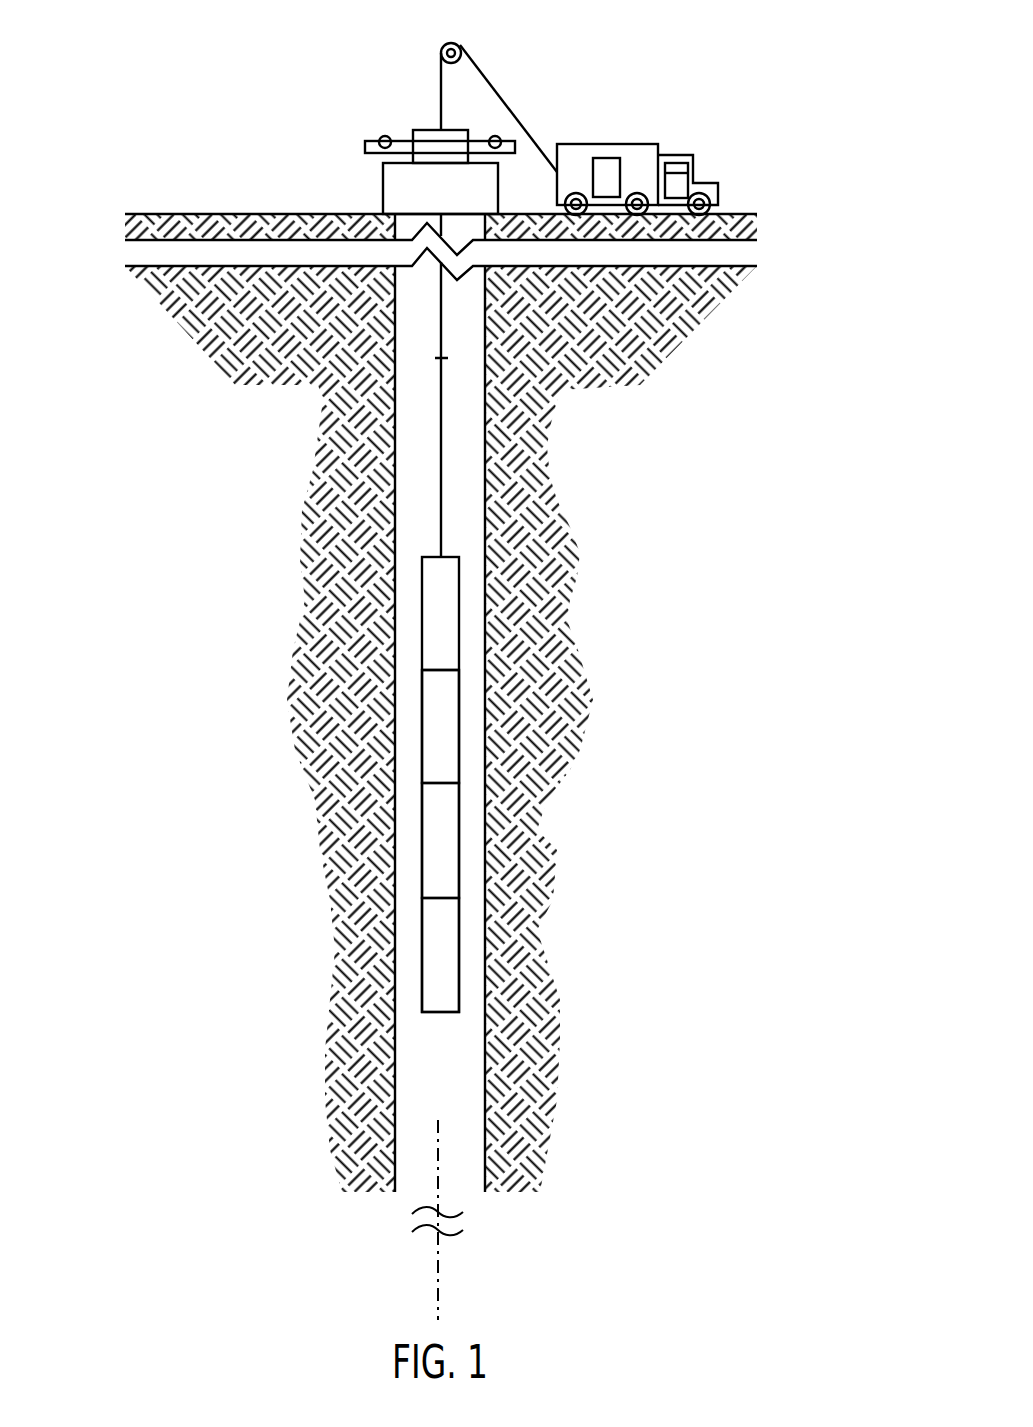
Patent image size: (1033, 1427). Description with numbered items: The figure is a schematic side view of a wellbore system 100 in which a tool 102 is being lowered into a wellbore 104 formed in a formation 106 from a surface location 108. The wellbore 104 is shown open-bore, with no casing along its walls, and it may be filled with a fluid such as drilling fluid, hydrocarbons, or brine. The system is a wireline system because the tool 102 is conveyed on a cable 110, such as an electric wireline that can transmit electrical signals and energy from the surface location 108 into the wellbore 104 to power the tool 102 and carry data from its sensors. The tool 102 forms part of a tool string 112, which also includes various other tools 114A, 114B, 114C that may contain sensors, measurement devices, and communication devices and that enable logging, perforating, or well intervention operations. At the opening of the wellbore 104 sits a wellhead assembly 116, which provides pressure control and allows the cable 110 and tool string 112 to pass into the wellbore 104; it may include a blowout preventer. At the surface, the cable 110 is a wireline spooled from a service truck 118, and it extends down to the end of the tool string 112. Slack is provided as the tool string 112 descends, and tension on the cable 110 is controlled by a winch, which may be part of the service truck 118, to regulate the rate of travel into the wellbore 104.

The wellbore system 100 is at (567, 88).
The tool 102 is at (437, 615).
The wellbore 104 is at (362, 328).
The formation 106 is at (663, 470).
The surface location 108 is at (745, 213).
The cable 110 is at (510, 107).
The tool string 112 is at (610, 593).
The tool 114A is at (447, 735).
The tool 114B is at (447, 847).
The tool 114C is at (447, 962).
The wellhead assembly 116 is at (422, 117).
The service truck 118 is at (682, 133).